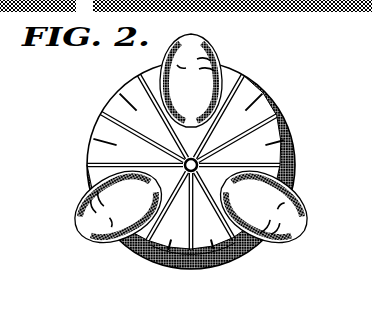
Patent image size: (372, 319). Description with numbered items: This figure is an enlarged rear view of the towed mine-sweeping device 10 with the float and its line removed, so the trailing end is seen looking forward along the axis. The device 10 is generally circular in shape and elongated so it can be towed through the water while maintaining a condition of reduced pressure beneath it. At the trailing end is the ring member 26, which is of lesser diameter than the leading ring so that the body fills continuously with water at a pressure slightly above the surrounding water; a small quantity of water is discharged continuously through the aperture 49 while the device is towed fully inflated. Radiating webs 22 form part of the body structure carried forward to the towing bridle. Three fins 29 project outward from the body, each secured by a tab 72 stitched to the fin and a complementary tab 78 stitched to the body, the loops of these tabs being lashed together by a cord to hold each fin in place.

The device 10 is at (110, 99).
The webs 22 is at (284, 104).
The ring member 26 is at (215, 161).
The fins 29 is at (323, 228).
The aperture 49 is at (211, 141).
The tab 72 is at (256, 199).
The complementary tab 78 is at (250, 249).